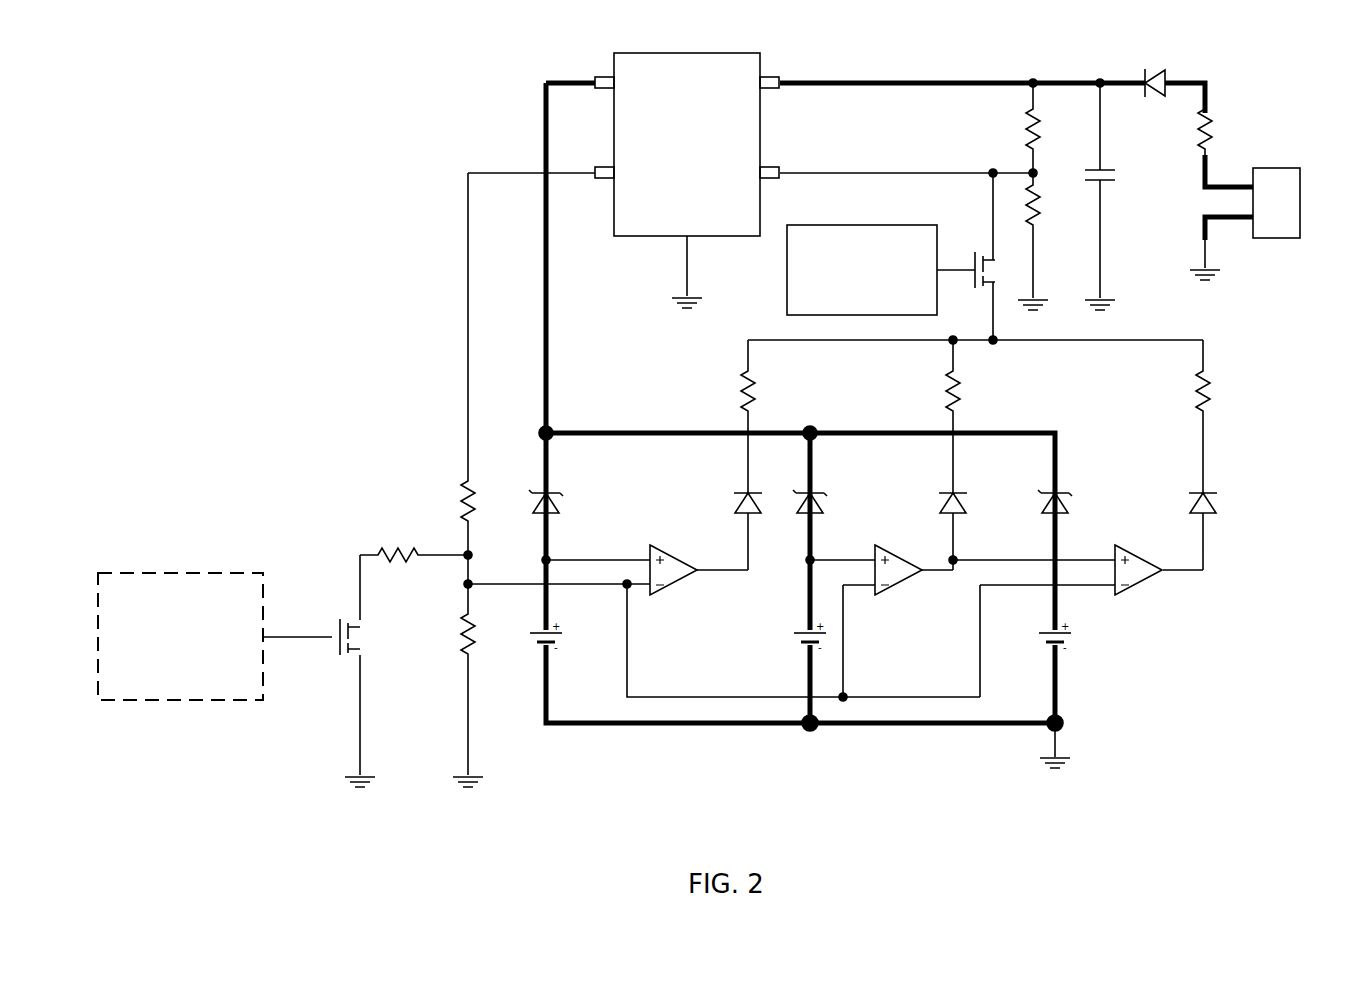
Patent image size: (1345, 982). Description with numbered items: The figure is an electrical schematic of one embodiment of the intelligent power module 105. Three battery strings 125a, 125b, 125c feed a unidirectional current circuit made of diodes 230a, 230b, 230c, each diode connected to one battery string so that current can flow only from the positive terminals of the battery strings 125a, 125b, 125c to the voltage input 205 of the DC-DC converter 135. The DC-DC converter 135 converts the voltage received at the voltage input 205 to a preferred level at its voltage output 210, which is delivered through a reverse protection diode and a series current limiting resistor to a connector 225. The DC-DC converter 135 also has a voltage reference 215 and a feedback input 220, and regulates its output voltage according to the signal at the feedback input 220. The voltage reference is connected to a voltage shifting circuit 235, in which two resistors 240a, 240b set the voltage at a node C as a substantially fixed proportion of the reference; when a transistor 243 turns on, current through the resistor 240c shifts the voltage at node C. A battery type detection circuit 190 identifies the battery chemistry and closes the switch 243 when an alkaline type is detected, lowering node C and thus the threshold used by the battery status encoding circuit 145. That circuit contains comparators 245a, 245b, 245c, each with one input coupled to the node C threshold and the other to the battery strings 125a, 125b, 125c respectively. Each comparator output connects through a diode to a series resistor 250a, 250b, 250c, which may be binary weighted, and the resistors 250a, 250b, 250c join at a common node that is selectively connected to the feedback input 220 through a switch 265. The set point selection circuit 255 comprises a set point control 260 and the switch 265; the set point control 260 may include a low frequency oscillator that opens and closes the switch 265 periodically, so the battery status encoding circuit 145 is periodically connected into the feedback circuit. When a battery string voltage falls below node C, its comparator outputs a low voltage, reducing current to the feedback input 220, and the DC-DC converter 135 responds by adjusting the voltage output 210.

The intelligent power module 105 is at (490, 62).
The DC-DC converter 135 is at (687, 180).
The voltage input 205 is at (604, 78).
The voltage output 210 is at (776, 75).
The voltage reference 215 is at (592, 170).
The feedback input 220 is at (765, 168).
The set point selection circuit 255 is at (840, 195).
The switch 265 is at (972, 265).
The set point control 260 is at (881, 270).
The connector 225 is at (1278, 168).
The battery status encoding circuit 145 is at (1236, 358).
The resistor 250a is at (739, 398).
The resistor 250b is at (957, 398).
The resistor 250c is at (1198, 398).
The diode 230a is at (558, 512).
The diode 230b is at (822, 512).
The diode 230c is at (1067, 512).
The comparator 245a is at (676, 590).
The comparator 245b is at (886, 590).
The comparator 245c is at (1124, 586).
The battery string 125a is at (560, 641).
The battery string 125b is at (816, 641).
The battery string 125c is at (1076, 637).
The voltage shifting circuit 235 is at (348, 456).
The resistor 240a is at (462, 488).
The resistor 240b is at (467, 630).
The resistor 240c is at (396, 547).
The transistor 243 is at (340, 614).
The battery type detection circuit 190 is at (180, 636).